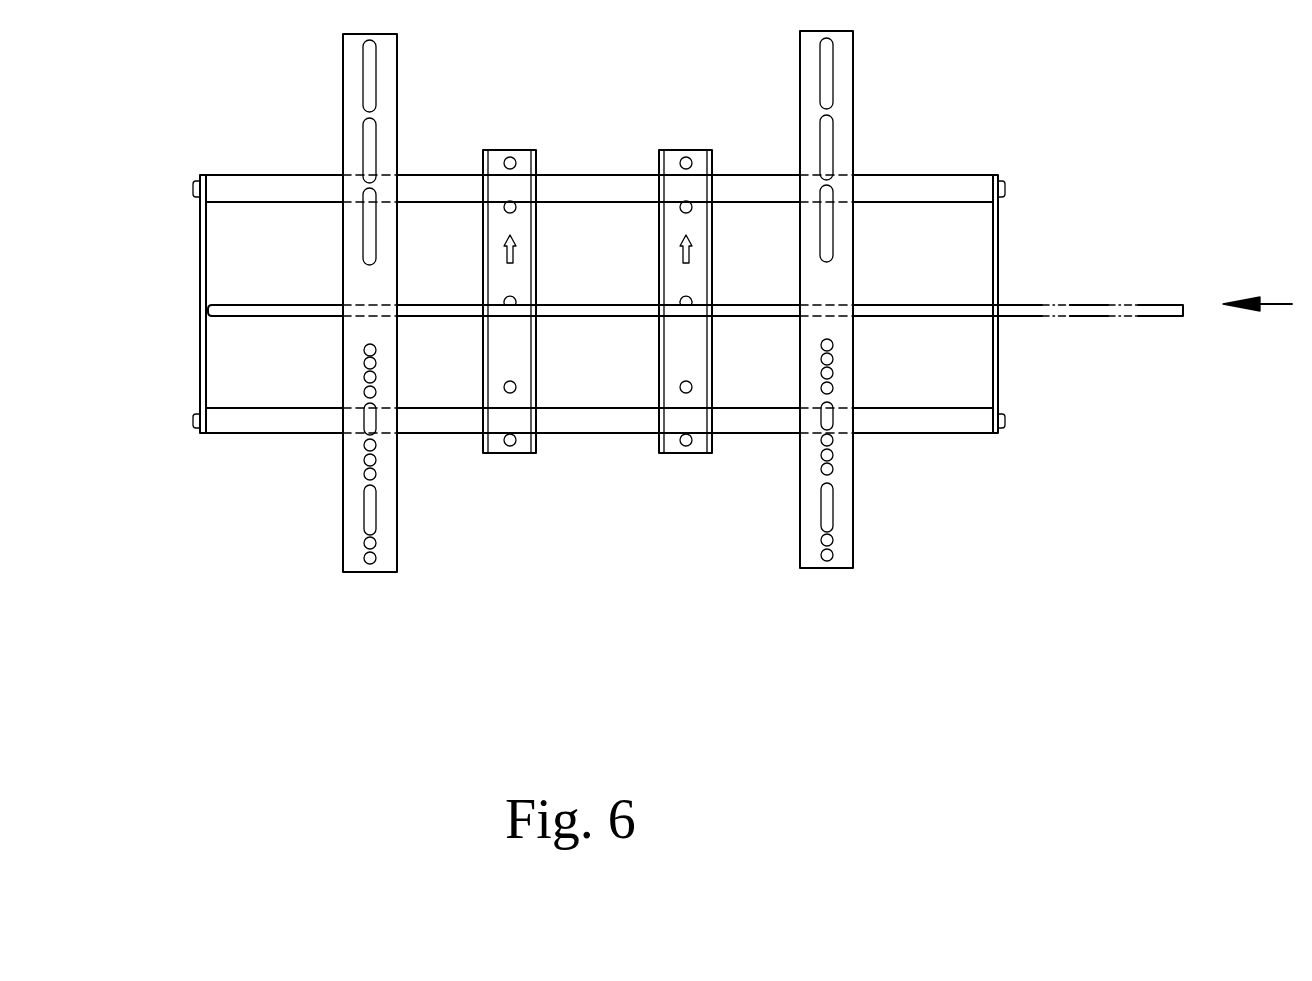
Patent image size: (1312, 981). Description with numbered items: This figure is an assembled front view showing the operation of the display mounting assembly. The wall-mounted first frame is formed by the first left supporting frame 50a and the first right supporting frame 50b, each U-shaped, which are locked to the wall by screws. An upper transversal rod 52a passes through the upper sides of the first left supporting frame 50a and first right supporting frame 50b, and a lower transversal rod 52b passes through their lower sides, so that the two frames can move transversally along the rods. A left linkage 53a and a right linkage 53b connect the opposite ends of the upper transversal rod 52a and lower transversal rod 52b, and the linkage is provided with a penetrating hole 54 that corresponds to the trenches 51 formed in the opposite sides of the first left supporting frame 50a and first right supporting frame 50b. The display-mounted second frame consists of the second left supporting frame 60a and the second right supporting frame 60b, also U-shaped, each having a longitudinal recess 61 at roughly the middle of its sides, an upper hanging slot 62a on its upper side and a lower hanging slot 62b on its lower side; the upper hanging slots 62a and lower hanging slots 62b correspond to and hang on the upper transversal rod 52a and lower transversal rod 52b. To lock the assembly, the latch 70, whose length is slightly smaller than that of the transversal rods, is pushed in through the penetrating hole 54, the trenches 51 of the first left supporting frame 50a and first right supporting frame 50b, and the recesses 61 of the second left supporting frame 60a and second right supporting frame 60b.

The first left supporting frame 50a is at (483, 258).
The first right supporting frame 50b is at (712, 264).
The trench 51 is at (483, 310).
The upper transversal rod 52a is at (563, 175).
The lower transversal rod 52b is at (603, 433).
The left linkage 53a is at (200, 305).
The right linkage 53b is at (998, 356).
The penetrating hole 54 is at (1003, 302).
The second left supporting frame 60a is at (343, 81).
The second right supporting frame 60b is at (853, 78).
The longitudinal recess 61 is at (343, 305).
The upper hanging slot 62a is at (343, 187).
The lower hanging slot 62b is at (343, 417).
The latch 70 is at (573, 305).